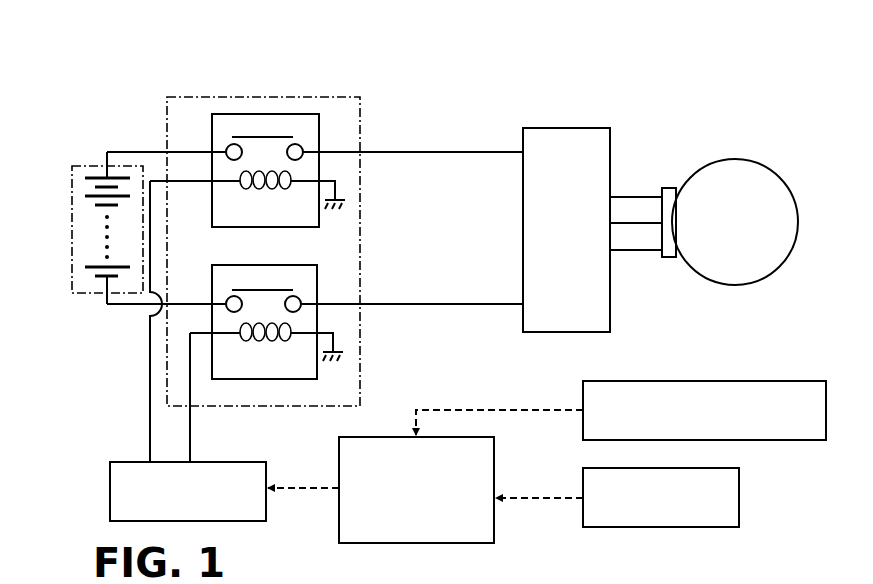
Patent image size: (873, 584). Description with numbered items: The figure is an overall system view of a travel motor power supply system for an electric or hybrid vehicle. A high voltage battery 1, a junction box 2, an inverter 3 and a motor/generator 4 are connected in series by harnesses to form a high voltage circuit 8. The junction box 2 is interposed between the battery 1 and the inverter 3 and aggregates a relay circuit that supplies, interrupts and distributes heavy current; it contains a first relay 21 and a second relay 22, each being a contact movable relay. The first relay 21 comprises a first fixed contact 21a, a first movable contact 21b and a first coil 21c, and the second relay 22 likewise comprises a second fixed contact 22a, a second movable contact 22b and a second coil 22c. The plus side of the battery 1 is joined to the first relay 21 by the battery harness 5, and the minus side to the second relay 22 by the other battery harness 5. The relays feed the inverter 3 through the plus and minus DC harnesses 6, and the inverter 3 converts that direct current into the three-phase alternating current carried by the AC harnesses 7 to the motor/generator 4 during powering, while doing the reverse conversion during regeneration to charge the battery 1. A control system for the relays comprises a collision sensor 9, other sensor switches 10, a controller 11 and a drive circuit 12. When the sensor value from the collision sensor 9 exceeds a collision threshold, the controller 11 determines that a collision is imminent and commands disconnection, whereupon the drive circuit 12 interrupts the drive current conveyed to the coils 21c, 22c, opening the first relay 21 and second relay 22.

The high voltage battery 1 is at (79, 163).
The junction box 2 is at (356, 124).
The inverter 3 is at (560, 128).
The motor/generator 4 is at (740, 156).
The battery harness 5 is at (133, 151).
The DC harness 6 is at (478, 152).
The AC harness 7 is at (625, 197).
The high voltage circuit 8 is at (430, 247).
The collision sensor 9 is at (739, 503).
The other sensor switches 10 is at (752, 381).
The controller 11 is at (494, 460).
The drive circuit 12 is at (250, 462).
The first relay 21 is at (250, 110).
The first fixed contact 21a is at (227, 148).
The first movable contact 21b is at (289, 136).
The first coil 21c is at (238, 190).
The second relay 22 is at (296, 264).
The second fixed contact 22a is at (228, 301).
The second movable contact 22b is at (252, 290).
The second coil 22c is at (240, 333).